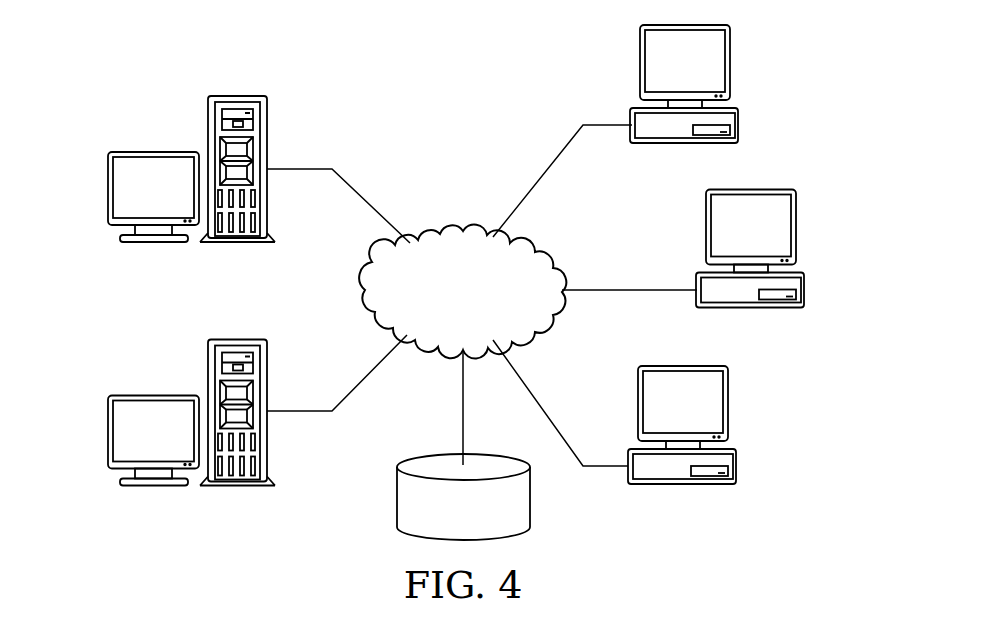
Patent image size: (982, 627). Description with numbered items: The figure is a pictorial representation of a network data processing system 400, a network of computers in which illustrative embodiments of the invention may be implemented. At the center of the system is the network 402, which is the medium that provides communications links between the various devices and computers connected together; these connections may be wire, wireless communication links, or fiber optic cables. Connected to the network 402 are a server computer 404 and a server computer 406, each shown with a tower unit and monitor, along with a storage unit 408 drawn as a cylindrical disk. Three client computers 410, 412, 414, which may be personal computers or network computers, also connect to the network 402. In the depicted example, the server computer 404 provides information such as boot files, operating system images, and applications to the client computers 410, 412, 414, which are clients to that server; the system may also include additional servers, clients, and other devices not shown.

The network data processing system 400 is at (338, 86).
The network 402 is at (457, 232).
The server computer 404 is at (108, 430).
The server computer 406 is at (108, 190).
The storage unit 408 is at (397, 498).
The client computer 410 is at (741, 115).
The client computer 412 is at (808, 300).
The client computer 414 is at (740, 478).